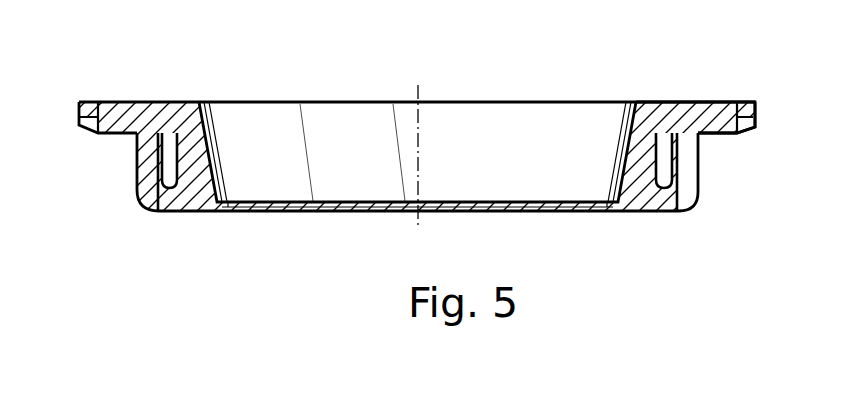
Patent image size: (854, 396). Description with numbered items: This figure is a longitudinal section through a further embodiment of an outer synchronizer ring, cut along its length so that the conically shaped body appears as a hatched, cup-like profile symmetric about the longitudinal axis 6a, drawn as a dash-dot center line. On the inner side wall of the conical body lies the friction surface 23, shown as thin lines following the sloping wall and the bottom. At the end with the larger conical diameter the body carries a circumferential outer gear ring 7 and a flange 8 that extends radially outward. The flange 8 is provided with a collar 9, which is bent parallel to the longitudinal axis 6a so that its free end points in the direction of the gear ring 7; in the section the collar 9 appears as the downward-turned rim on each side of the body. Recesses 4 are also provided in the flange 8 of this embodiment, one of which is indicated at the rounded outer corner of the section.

The recess 4 is at (683, 192).
The longitudinal axis 6a is at (417, 90).
The circumferential outer gear ring 7 is at (702, 122).
The flange 8 is at (177, 203).
The collar 9 is at (150, 162).
The friction surface 23 is at (210, 152).